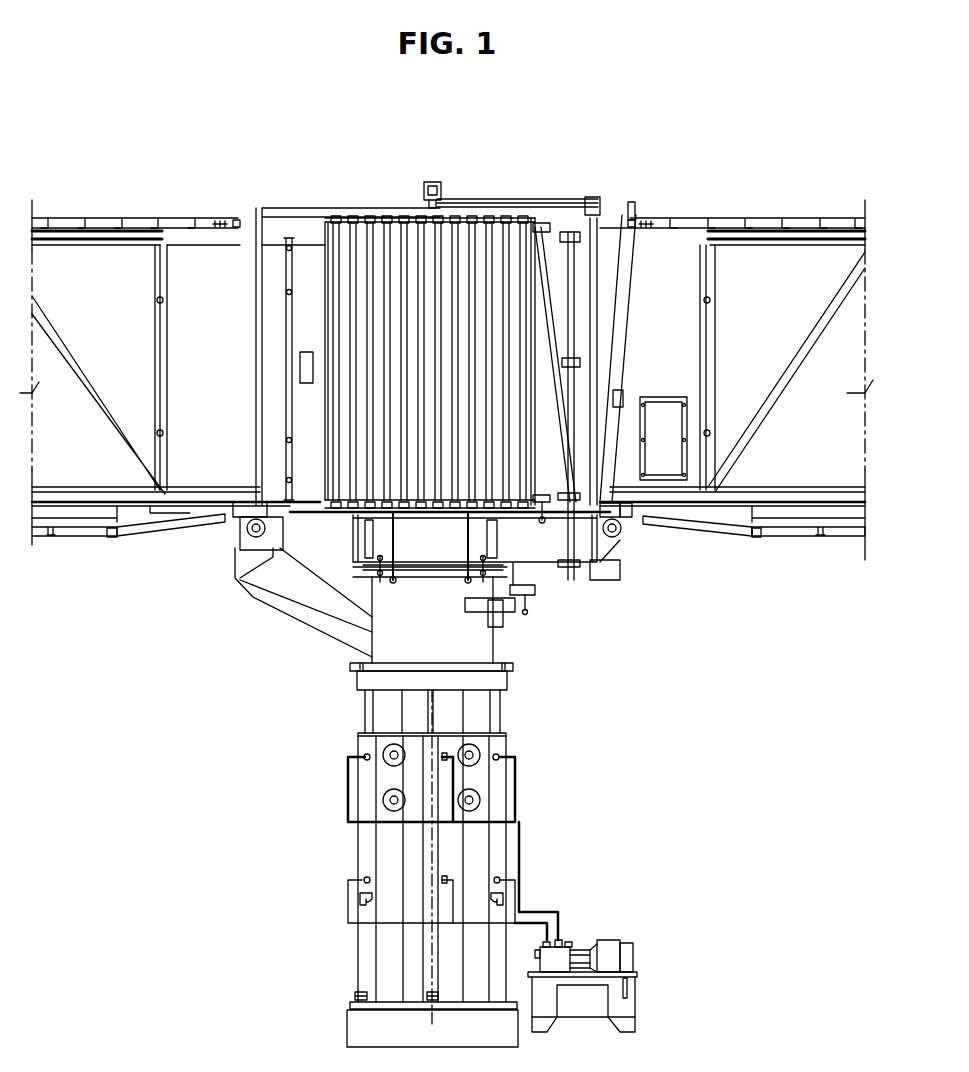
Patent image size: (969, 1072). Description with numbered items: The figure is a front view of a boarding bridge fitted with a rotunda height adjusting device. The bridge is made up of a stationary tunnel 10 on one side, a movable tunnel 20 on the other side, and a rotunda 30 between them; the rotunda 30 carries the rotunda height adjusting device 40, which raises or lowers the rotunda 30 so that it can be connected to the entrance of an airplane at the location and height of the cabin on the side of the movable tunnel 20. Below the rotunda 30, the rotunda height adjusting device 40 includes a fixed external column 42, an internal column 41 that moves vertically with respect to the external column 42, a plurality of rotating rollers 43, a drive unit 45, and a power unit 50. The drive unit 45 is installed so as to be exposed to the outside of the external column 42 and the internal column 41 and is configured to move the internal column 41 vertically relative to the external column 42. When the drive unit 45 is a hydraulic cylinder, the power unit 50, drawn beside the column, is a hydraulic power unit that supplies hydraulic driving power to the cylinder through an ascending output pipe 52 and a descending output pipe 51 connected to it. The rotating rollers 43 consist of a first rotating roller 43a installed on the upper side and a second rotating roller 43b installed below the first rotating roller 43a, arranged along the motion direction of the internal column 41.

The stationary tunnel 10 is at (137, 230).
The movable tunnel 20 is at (800, 230).
The rotunda 30 is at (470, 222).
The rotunda height adjusting device 40 is at (476, 829).
The internal column 41 is at (360, 680).
The external column 42 is at (360, 960).
The rotating rollers 43 is at (524, 752).
The first rotating roller 43a is at (478, 750).
The second rotating roller 43b is at (478, 800).
The drive unit 45 is at (360, 744).
The power unit 50 is at (628, 946).
The descending output pipe 51 is at (348, 900).
The ascending output pipe 52 is at (348, 800).